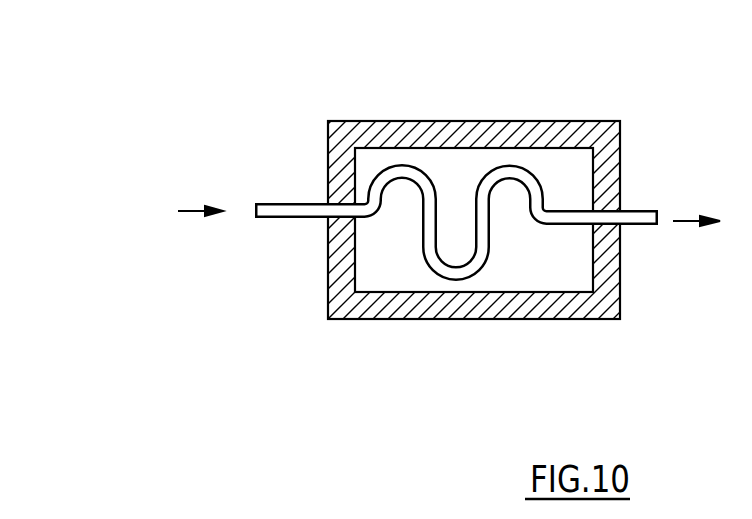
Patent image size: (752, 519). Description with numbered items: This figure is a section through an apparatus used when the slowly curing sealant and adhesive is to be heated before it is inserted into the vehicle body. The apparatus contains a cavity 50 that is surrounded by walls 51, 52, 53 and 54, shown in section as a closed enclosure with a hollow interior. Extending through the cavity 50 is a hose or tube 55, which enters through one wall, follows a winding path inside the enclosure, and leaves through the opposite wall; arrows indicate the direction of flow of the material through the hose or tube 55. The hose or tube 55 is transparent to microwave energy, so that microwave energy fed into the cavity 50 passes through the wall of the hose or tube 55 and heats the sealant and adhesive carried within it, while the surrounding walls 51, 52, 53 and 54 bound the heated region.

The cavity 50 is at (442, 204).
The wall 51 is at (620, 157).
The wall 52 is at (510, 313).
The wall 53 is at (342, 272).
The wall 54 is at (487, 138).
The hose or tube 55 is at (410, 175).